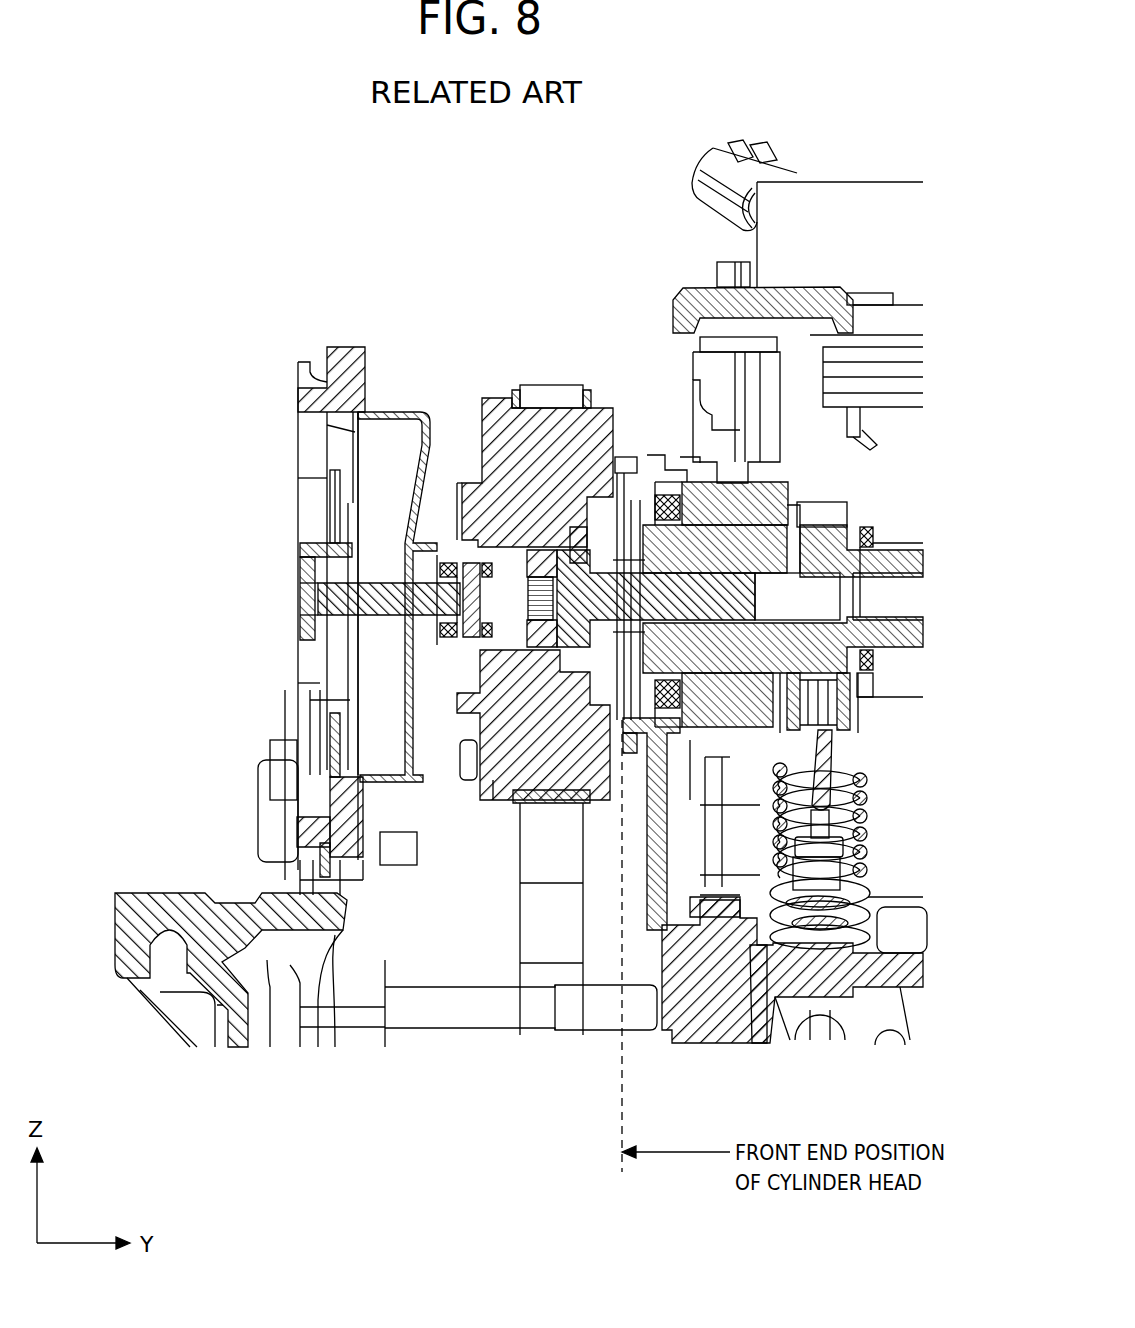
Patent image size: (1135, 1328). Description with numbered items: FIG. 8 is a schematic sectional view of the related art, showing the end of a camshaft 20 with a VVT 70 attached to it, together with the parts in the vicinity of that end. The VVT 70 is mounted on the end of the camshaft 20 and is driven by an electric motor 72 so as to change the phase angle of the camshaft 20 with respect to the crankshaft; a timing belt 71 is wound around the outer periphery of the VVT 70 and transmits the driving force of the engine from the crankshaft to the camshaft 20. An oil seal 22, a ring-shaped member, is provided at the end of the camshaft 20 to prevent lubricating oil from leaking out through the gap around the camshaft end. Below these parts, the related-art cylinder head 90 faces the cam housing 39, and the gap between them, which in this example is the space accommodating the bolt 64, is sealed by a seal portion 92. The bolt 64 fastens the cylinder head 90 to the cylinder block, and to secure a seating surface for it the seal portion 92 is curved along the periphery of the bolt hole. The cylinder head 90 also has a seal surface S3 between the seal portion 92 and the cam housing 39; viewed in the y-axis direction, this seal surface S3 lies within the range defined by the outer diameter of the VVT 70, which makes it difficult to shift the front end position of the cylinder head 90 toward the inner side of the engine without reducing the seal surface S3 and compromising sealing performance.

The camshaft 20 is at (832, 503).
The oil seal 22 is at (645, 660).
The cam housing 39 is at (577, 785).
The bolt 64 is at (750, 1045).
The VVT 70 is at (470, 418).
The timing belt 71 is at (560, 385).
The electric motor 72 is at (298, 440).
The cylinder head 90 is at (785, 1046).
The seal portion 92 is at (647, 863).
The seal surface S3 is at (680, 733).